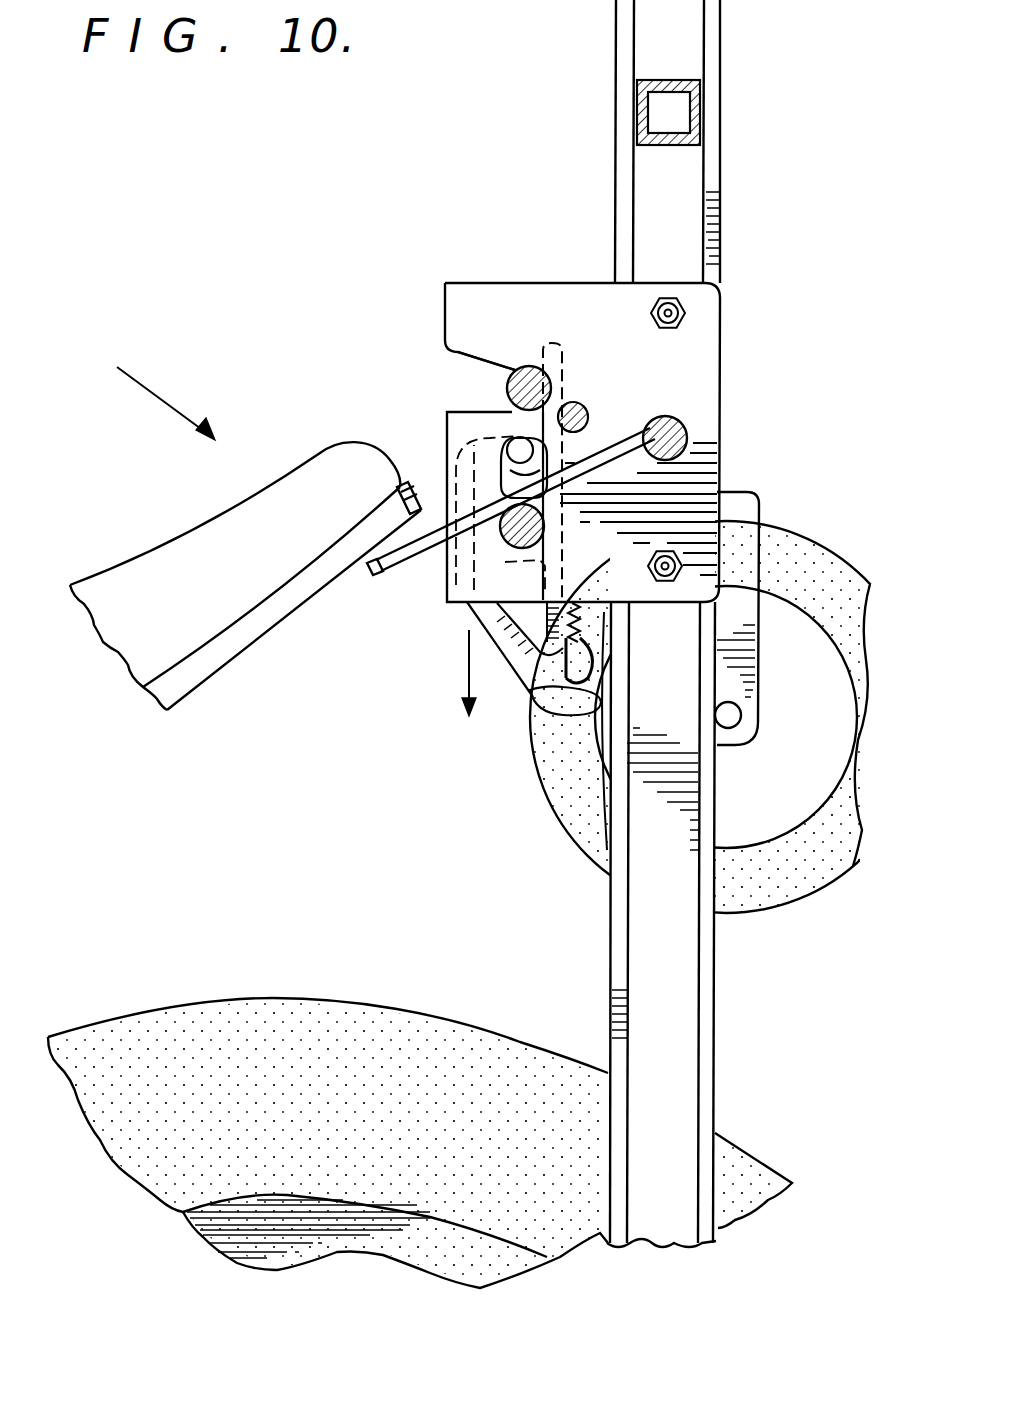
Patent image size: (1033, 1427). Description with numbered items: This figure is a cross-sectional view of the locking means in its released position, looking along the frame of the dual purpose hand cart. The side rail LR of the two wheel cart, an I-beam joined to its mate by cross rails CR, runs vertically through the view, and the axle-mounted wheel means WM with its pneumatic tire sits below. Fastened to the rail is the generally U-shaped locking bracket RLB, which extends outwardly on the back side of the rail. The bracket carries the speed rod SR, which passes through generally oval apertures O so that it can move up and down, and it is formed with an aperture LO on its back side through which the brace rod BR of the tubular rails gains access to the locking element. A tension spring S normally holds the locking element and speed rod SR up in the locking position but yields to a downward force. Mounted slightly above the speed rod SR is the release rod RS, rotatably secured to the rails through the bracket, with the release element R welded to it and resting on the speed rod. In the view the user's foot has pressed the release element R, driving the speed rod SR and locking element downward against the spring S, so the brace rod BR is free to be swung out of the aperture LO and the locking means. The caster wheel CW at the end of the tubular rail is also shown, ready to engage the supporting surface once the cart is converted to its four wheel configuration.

The cross rails CR is at (688, 82).
The side rail LR is at (615, 150).
The locking bracket RLB is at (523, 298).
The aperture LO is at (453, 349).
The brace rod BR is at (506, 387).
The apertures O is at (505, 450).
The release rod RS is at (682, 424).
The release element R is at (375, 575).
The speed rod SR is at (507, 545).
The tension spring S is at (603, 656).
The caster wheel CW is at (788, 882).
The wheel means WM is at (143, 1030).